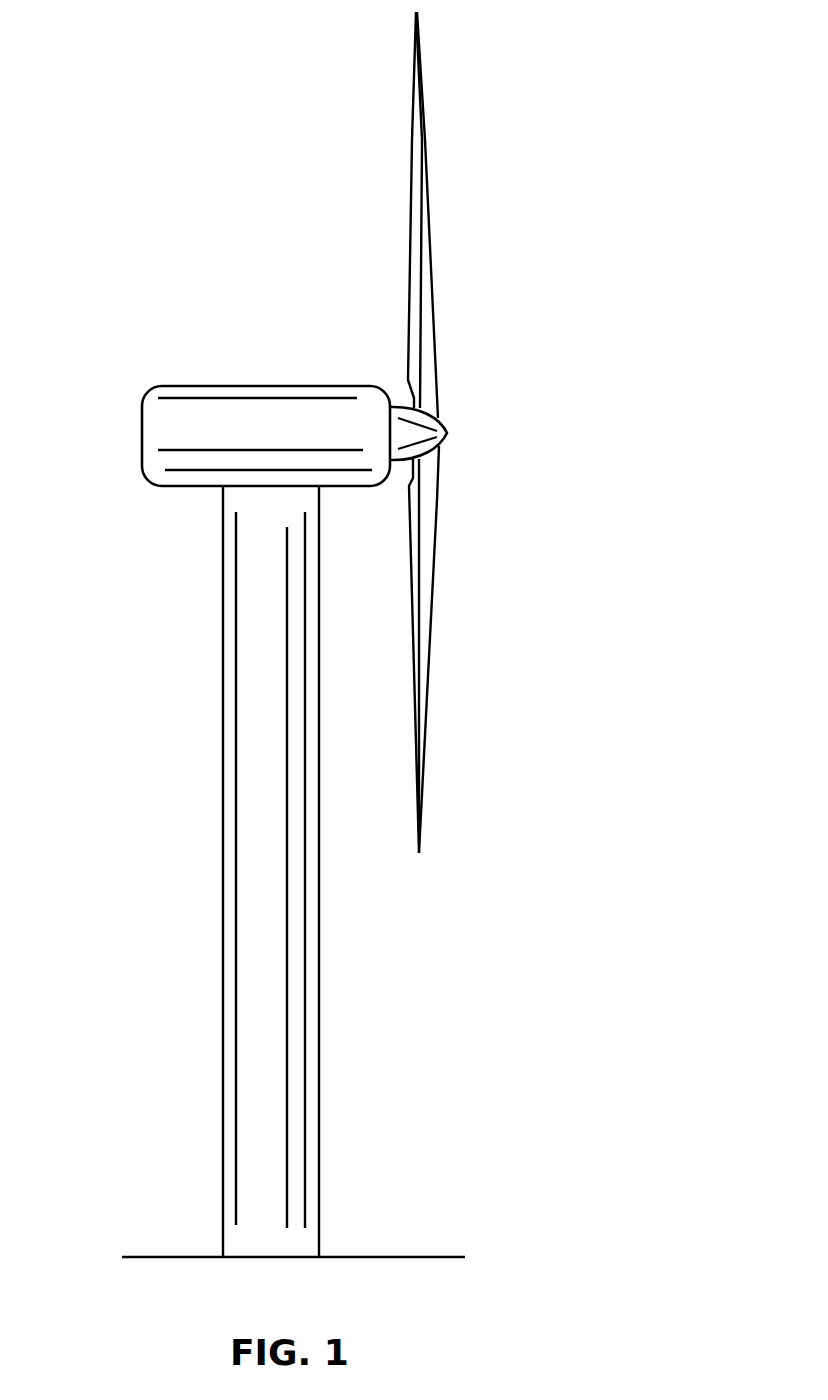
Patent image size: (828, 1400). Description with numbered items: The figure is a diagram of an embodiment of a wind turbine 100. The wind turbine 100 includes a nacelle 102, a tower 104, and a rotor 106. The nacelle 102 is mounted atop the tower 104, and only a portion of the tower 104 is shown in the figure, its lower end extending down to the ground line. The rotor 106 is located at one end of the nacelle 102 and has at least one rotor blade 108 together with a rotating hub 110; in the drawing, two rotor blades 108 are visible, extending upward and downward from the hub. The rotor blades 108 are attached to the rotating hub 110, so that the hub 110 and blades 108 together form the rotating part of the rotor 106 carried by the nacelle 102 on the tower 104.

The wind turbine 100 is at (203, 198).
The nacelle 102 is at (267, 386).
The tower 104 is at (223, 642).
The rotor 106 is at (604, 425).
The rotor blade 108 is at (423, 90).
The rotating hub 110 is at (445, 422).